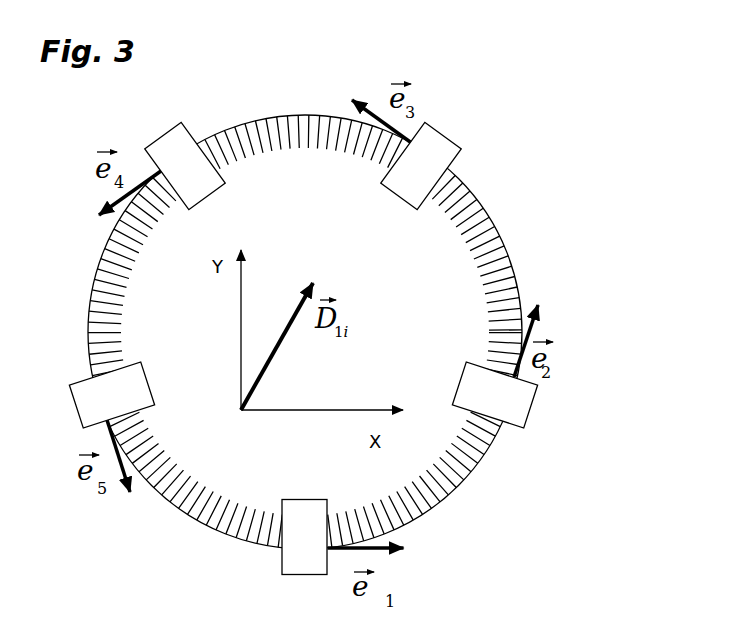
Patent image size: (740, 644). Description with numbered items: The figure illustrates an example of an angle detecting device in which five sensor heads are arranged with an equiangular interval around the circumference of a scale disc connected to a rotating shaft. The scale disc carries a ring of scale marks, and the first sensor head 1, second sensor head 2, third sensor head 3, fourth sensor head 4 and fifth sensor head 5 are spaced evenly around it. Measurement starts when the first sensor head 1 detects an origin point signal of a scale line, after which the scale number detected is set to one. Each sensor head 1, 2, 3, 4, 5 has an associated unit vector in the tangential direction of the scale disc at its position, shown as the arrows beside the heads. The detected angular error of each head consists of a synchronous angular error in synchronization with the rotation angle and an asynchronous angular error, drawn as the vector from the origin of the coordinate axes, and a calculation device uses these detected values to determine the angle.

The first sensor head 1 is at (304, 537).
The second sensor head 2 is at (494, 395).
The third sensor head 3 is at (421, 165).
The fourth sensor head 4 is at (185, 165).
The fifth sensor head 5 is at (111, 395).